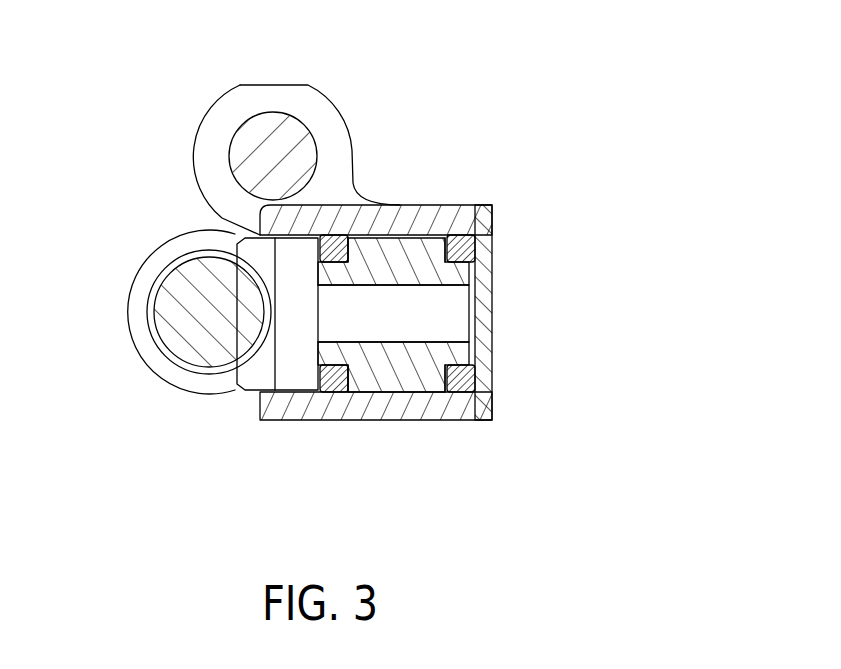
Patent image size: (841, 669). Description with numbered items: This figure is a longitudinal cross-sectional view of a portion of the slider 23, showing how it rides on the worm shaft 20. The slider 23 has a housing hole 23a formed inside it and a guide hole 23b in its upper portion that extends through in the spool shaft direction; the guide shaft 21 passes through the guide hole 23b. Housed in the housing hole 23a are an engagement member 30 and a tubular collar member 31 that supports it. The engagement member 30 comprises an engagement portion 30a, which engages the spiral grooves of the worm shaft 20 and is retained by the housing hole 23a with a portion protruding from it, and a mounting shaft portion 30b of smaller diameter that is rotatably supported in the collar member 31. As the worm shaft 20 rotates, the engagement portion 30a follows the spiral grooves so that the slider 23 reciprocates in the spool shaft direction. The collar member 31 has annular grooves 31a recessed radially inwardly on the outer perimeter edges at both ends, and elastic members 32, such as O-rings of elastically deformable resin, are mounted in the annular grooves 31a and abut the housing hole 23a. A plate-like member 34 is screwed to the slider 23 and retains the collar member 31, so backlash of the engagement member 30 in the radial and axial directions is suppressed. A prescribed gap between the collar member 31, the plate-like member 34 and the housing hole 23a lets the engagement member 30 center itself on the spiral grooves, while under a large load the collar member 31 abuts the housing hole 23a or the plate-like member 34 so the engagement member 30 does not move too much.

The worm shaft 20 is at (207, 317).
The guide shaft 21 is at (268, 160).
The slider 23 is at (466, 249).
The housing hole 23a is at (426, 246).
The guide hole 23b is at (232, 150).
The engagement member 30 is at (250, 395).
The engagement portion 30a is at (232, 333).
The mounting shaft portion 30b is at (425, 325).
The collar member 31 is at (393, 375).
The annular grooves 31a is at (340, 240).
The elastic members 32 is at (334, 380).
The plate-like member 34 is at (485, 273).